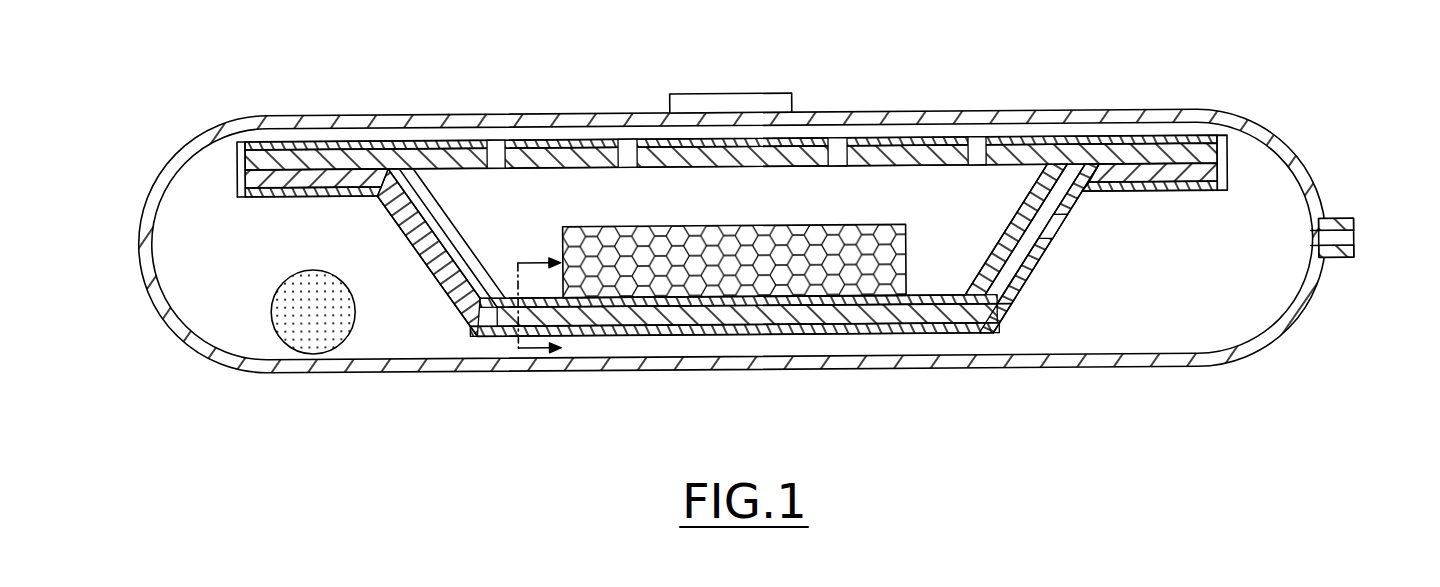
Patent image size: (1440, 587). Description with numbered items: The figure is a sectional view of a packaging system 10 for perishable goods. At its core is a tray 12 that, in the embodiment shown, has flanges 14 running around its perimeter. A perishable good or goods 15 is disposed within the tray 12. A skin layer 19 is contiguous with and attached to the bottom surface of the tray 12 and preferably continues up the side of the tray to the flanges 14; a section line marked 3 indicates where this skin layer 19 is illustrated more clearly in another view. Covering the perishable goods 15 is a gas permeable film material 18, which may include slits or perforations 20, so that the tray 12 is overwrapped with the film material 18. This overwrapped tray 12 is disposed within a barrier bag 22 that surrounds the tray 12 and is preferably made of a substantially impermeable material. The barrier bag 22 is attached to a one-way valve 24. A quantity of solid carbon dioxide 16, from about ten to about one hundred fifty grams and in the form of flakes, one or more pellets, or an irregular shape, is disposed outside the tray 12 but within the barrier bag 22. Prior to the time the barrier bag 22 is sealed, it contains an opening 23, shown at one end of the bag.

The packaging system 10 is at (180, 111).
The tray 12 is at (753, 321).
The flanges 14 is at (343, 198).
The perishable goods 15 is at (786, 244).
The solid carbon dioxide 16 is at (340, 319).
The gas permeable film material 18 is at (1023, 288).
The skin layer 19 is at (448, 239).
The slits or perforations 20 is at (1060, 237).
The barrier bag 22 is at (378, 132).
The opening 23 is at (1353, 245).
The one-way valve 24 is at (697, 110).
The section line 3 is at (493, 414).